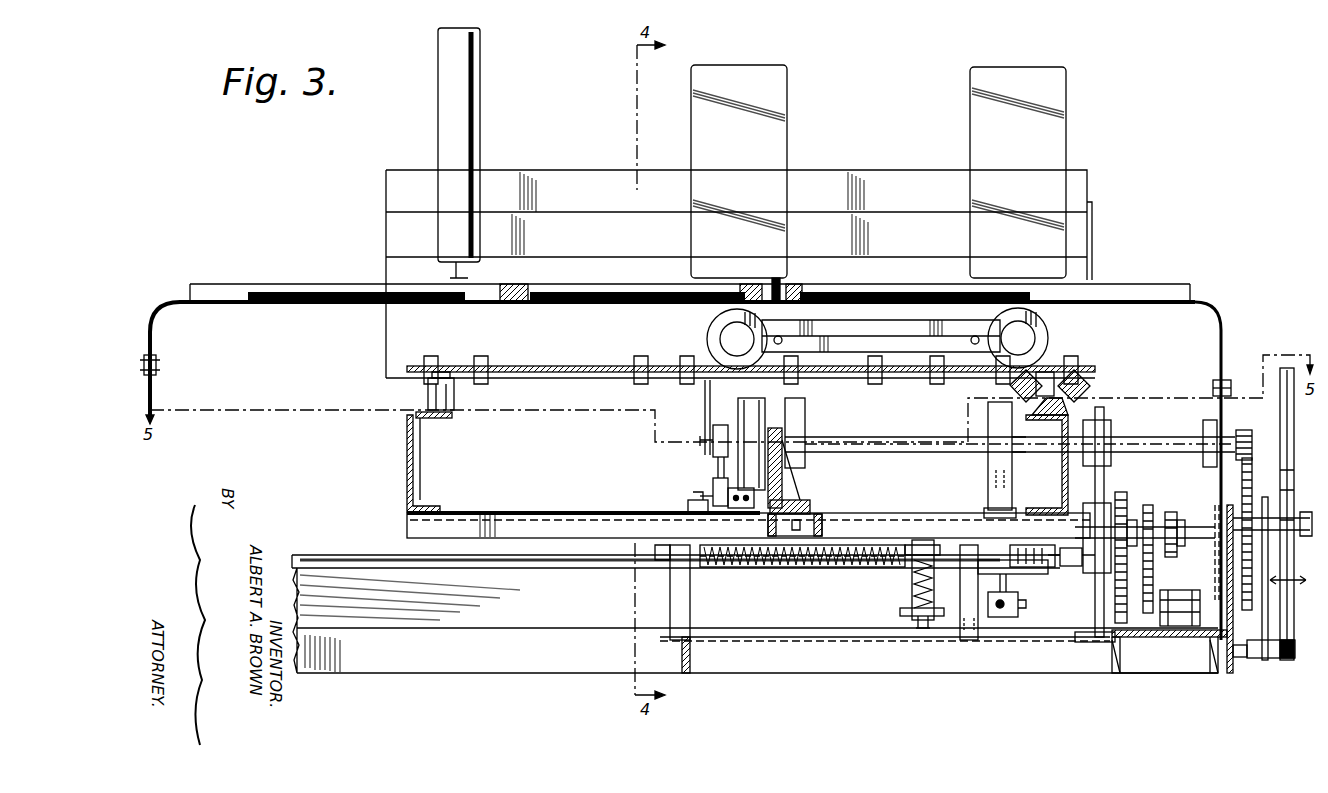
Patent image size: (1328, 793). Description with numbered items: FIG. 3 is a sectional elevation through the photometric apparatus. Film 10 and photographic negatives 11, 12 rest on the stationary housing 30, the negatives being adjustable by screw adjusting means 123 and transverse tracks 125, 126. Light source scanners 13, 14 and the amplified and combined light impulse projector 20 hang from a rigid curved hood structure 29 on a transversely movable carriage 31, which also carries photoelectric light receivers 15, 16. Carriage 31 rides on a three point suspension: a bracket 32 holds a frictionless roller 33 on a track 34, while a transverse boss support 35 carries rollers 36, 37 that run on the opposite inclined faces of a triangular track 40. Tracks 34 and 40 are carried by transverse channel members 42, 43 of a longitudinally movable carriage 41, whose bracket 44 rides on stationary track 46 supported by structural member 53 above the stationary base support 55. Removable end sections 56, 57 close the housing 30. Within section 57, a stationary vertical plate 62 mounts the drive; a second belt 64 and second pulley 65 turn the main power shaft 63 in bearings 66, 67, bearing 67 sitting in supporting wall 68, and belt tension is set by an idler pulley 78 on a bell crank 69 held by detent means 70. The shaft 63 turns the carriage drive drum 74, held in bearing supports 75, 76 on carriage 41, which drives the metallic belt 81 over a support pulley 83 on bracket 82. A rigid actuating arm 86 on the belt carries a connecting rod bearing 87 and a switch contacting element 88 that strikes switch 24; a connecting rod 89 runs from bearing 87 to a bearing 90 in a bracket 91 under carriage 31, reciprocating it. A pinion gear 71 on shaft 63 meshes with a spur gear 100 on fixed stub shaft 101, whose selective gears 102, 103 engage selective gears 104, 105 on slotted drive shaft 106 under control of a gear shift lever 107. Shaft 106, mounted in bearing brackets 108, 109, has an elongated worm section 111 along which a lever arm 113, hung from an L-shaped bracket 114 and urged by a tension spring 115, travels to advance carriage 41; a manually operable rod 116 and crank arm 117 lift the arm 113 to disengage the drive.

The film 10 is at (310, 290).
The photographic negative 11 is at (606, 290).
The photographic negative 12 is at (925, 290).
The light source scanner 13 is at (775, 142).
The light source scanner 14 is at (1055, 138).
The photoelectric light receiver 15 is at (722, 341).
The photoelectric light receiver 16 is at (1026, 339).
The amplified and combined light impulse projector 20 is at (484, 76).
The switch 24 is at (688, 506).
The rigid curved hood structure 29 is at (577, 176).
The stationary housing 30 is at (170, 305).
The movable carriage 31 is at (602, 378).
The bracket 32 is at (1092, 248).
The frictionless roller 33 is at (425, 397).
The track 34 is at (445, 418).
The transverse boss support 35 is at (1046, 380).
The roller 36 is at (1012, 388).
The roller 37 is at (1083, 392).
The cooperating track 40 is at (1070, 412).
The movable carriage 41 is at (573, 504).
The transverse channel member 42 is at (414, 466).
The transverse channel member 43 is at (1062, 482).
The bracket 44 is at (672, 520).
The stationary track 46 is at (357, 556).
The structural member 53 is at (755, 620).
The stationary base support 55 is at (700, 668).
The removable end section 56 is at (157, 398).
The removable end section 57 is at (1215, 388).
The stationary vertical plate 62 is at (1230, 678).
The main power shaft 63 is at (1040, 452).
The second belt 64 is at (1288, 370).
The second pulley 65 is at (1280, 402).
The bearing 66 is at (1203, 428).
The bearing 67 is at (1110, 433).
The supporting wall 68 is at (1096, 608).
The bell crank 69 is at (1265, 652).
The detent means 70 is at (1242, 658).
The pinion gear 71 is at (1254, 430).
The carriage drive drum 74 is at (882, 418).
The bearing support 75 is at (808, 440).
The bearing support 76 is at (990, 432).
The idler pulley 78 is at (1292, 540).
The metallic belt 81 is at (750, 398).
The bracket 82 is at (790, 482).
The support pulley 83 is at (740, 420).
The rigid actuating arm 86 is at (792, 500).
The connecting rod bearing 87 is at (713, 485).
The switch contacting element 88 is at (700, 496).
The connecting rod 89 is at (716, 466).
The bearing 90 is at (713, 430).
The bracket 91 is at (705, 403).
The spur gear 100 is at (1262, 485).
The fixed stub shaft 101 is at (1192, 524).
The selective gear 102 is at (1172, 512).
The selective gear 103 is at (1127, 508).
The selective gear 104 is at (1148, 632).
The selective gear 105 is at (1115, 622).
The slotted drive shaft 106 is at (1068, 570).
The gear shift lever 107 is at (1290, 598).
The bearing bracket 108 is at (690, 605).
The bearing bracket 109 is at (963, 618).
The worm section 111 is at (832, 580).
The lever arm 113 is at (932, 535).
The L-shaped bracket 114 is at (905, 602).
The tension spring 115 is at (912, 586).
The manually operable rod 116 is at (1003, 618).
The crank arm 117 is at (1003, 578).
The screw adjusting means 123 is at (798, 285).
The transverse track 125 is at (512, 284).
The transverse track 126 is at (760, 282).